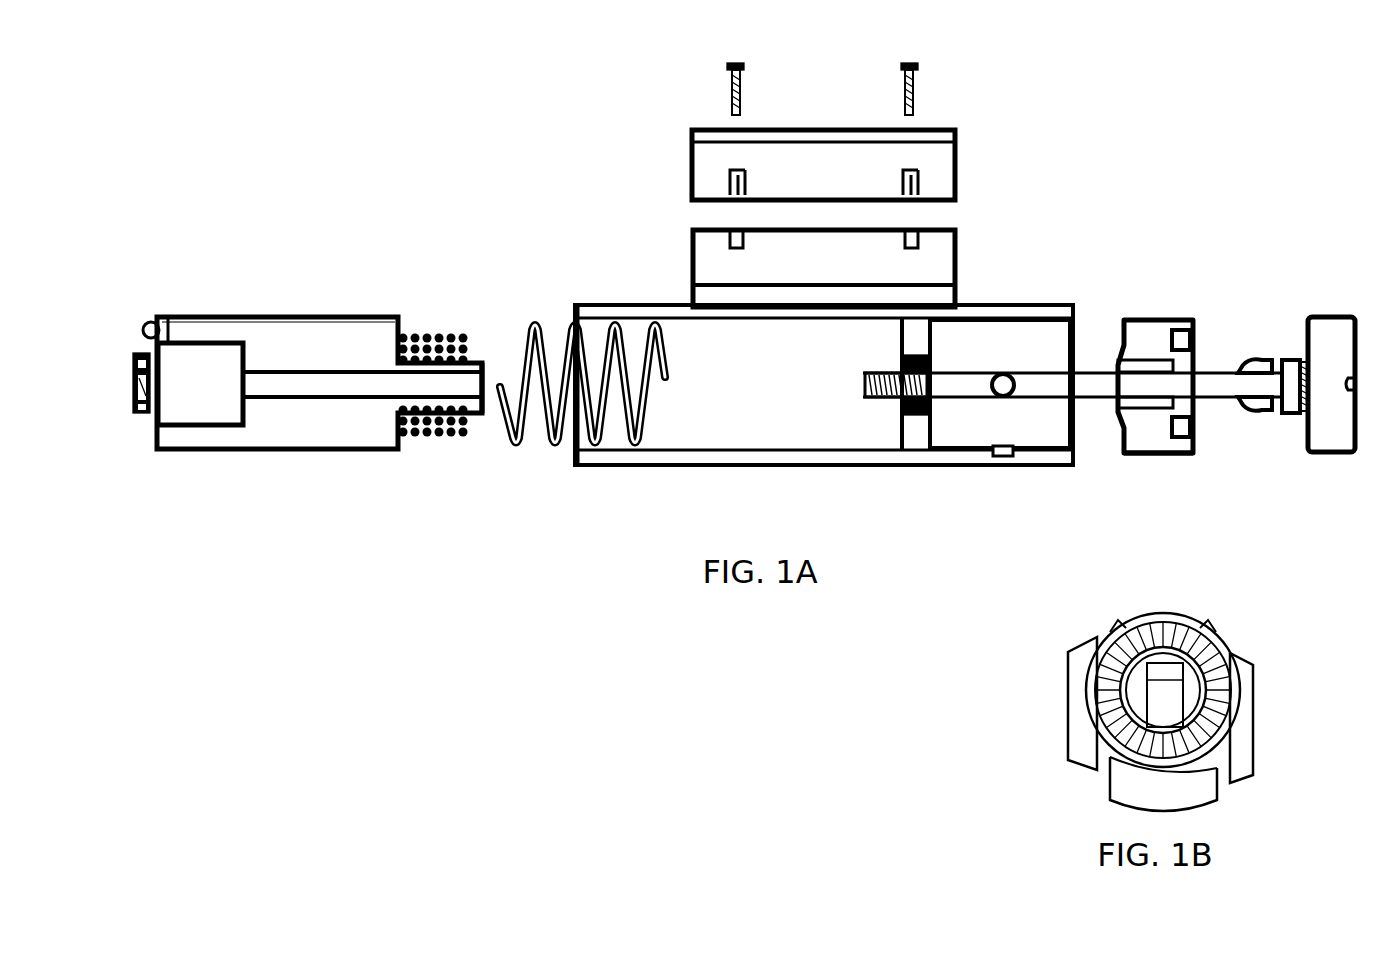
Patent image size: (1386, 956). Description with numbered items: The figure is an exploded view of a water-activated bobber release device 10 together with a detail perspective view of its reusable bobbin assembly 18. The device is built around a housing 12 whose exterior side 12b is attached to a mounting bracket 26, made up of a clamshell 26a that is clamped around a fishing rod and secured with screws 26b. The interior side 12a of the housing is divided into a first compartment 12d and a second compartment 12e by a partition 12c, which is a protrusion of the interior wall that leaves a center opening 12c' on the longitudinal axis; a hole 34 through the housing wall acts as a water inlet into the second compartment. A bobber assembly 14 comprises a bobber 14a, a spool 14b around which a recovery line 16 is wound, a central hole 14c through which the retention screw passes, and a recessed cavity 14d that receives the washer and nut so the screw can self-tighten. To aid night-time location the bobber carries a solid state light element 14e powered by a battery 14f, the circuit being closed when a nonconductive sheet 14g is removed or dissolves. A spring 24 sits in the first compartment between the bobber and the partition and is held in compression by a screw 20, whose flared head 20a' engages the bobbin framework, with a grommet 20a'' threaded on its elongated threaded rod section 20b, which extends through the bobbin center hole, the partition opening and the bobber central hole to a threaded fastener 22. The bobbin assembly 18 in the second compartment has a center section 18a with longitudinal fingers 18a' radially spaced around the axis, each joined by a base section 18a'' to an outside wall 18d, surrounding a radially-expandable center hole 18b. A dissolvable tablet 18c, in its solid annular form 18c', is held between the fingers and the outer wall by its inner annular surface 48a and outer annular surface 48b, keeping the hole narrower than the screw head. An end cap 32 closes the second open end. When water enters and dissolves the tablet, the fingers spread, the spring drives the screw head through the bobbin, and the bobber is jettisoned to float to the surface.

In FIG. 1A, the water-activated bobber release device 10 is at (307, 60).
In FIG. 1A, the housing 12 is at (745, 462).
In FIG. 1A, the interior side 12a is at (667, 303).
In FIG. 1A, the exterior side 12b is at (810, 447).
In FIG. 1A, the partition 12c is at (961, 344).
In FIG. 1A, the internal partition wall opening 12c' is at (962, 344).
In FIG. 1A, the first compartment 12d is at (695, 420).
In FIG. 1A, the second compartment 12e is at (948, 422).
In FIG. 1A, the bobber assembly 14 is at (350, 452).
In FIG. 1A, the bobber 14a is at (308, 330).
In FIG. 1A, the spool 14b is at (482, 345).
In FIG. 1A, the central hole 14c is at (360, 380).
In FIG. 1A, the recessed cavity 14d is at (212, 382).
In FIG. 1A, the solid state light element 14e is at (152, 323).
In FIG. 1A, the battery 14f is at (170, 323).
In FIG. 1A, the nonconductive sheet 14g is at (162, 323).
In FIG. 1A, the line 16 is at (455, 435).
In FIG. 1A, the bobbin assembly 18 is at (1120, 423).
In FIG. 1B, the bobbin assembly 18 is at (1078, 727).
In FIG. 1A, the center section 18a is at (1156, 316).
In FIG. 1B, the longitudinal fingers 18a' is at (1204, 652).
In FIG. 1B, the base section 18a'' is at (1062, 729).
In FIG. 1A, the center hole 18b is at (1148, 362).
In FIG. 1B, the center hole 18b is at (1118, 625).
In FIG. 1A, the dissolvable tablet 18c is at (1189, 472).
In FIG. 1B, the solid bobbin tablet 18c' is at (1270, 727).
In FIG. 1B, the outside wall 18d is at (1178, 788).
In FIG. 1A, the screw 20 is at (1095, 385).
In FIG. 1A, the shaft head 20a' is at (1321, 331).
In FIG. 1A, the shaft clip 20a'' is at (1233, 423).
In FIG. 1A, the elongated threaded rod section 20b is at (893, 397).
In FIG. 1A, the threaded fastener 22 is at (157, 410).
In FIG. 1A, the spring 24 is at (545, 437).
In FIG. 1A, the mounting bracket 26 is at (718, 252).
In FIG. 1A, the clamshell 26a is at (938, 252).
In FIG. 1A, the screws 26b is at (742, 93).
In FIG. 1A, the end cap 32 is at (1340, 440).
In FIG. 1A, the hole 34 is at (1000, 398).
In FIG. 1A, the inner annular surface 48a is at (1147, 407).
In FIG. 1A, the outer annular surface 48b is at (1150, 453).